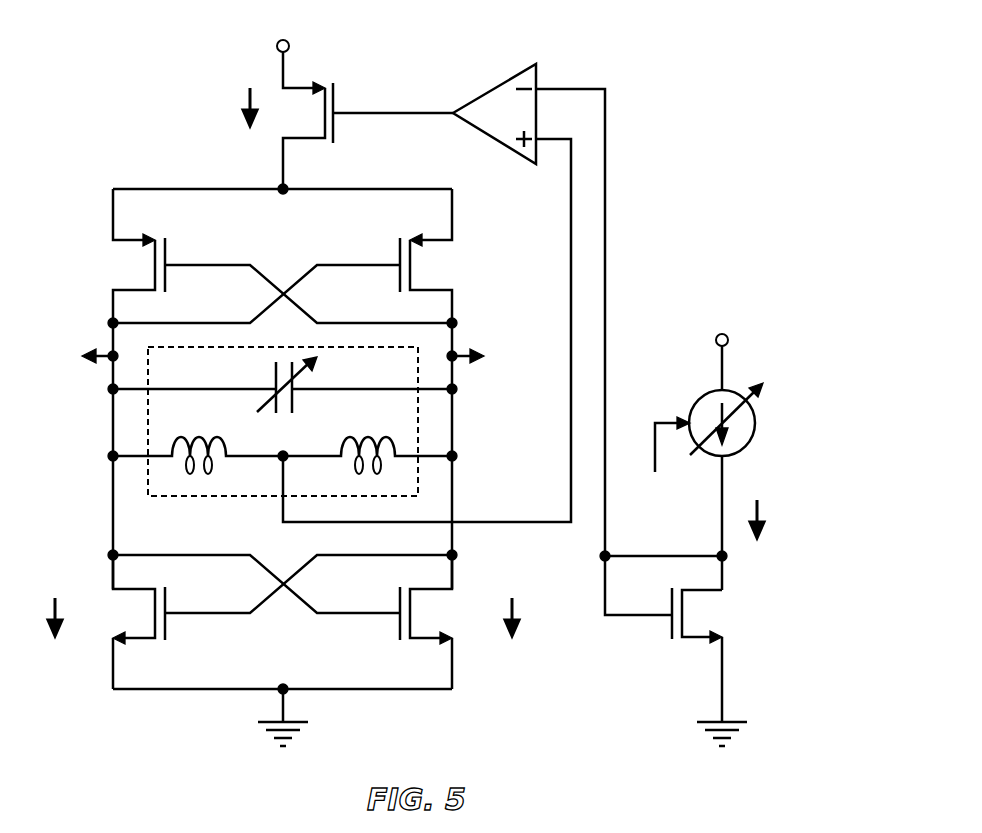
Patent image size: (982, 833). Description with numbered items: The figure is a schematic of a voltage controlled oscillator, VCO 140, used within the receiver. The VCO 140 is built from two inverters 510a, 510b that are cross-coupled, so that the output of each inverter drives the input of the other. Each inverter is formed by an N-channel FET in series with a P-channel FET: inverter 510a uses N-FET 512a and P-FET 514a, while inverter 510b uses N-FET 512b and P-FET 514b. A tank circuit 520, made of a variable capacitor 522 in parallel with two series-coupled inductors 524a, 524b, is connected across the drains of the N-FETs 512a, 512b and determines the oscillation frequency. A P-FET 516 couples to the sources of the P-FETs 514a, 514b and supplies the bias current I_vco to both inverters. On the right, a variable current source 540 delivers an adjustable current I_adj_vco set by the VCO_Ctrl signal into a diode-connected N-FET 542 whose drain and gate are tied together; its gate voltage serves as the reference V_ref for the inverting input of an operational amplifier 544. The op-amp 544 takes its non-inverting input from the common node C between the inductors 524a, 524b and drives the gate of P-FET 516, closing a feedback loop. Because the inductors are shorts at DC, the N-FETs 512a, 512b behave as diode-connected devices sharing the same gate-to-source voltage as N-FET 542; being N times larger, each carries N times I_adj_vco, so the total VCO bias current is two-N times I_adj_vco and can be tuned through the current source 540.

The VCO 140 is at (114, 42).
The P-FET 516 is at (335, 105).
The operational amplifier 544 is at (501, 82).
The P-FET 514a is at (167, 254).
The P-FET 514b is at (398, 254).
The N-FET 512a is at (167, 602).
The N-FET 512b is at (398, 602).
The inverter 510a is at (231, 470).
The inverter 510b is at (335, 470).
The tank circuit 520 is at (224, 500).
The variable capacitor 522 is at (270, 381).
The inductor 524a is at (201, 440).
The inductor 524b is at (370, 440).
The variable current source 540 is at (701, 395).
The N-FET 542 is at (670, 628).